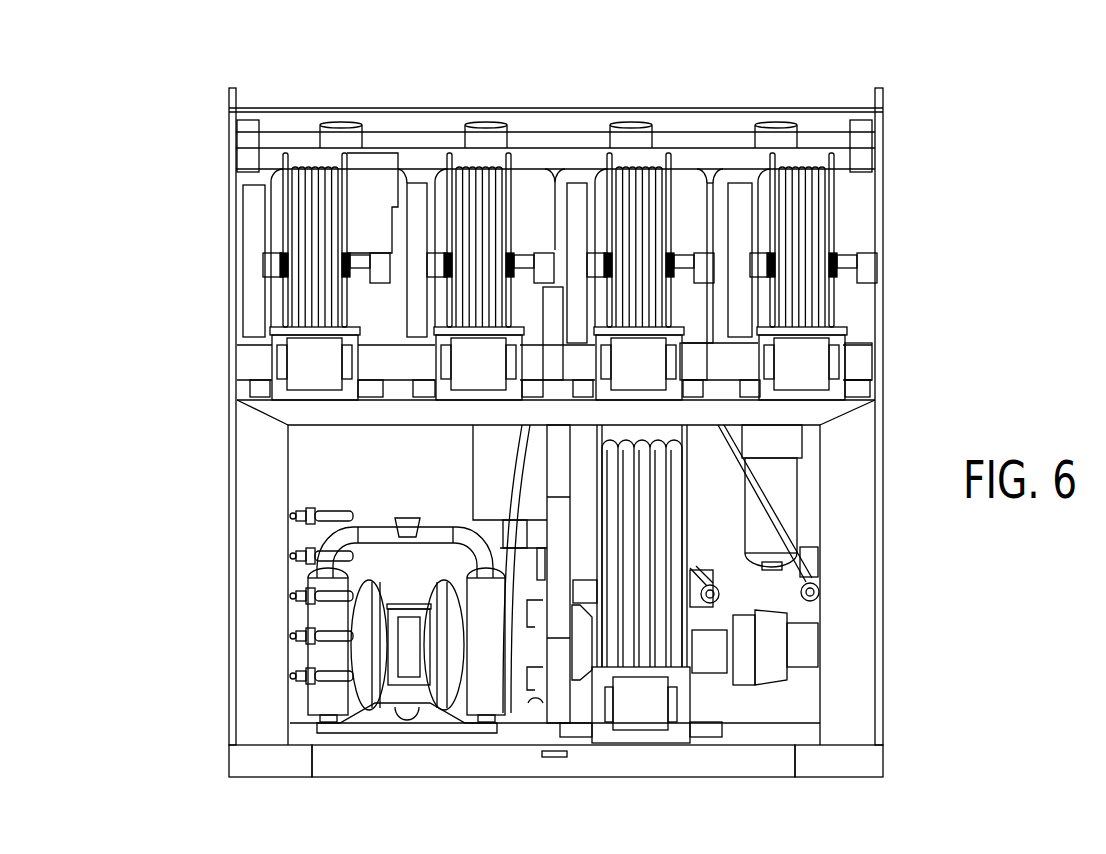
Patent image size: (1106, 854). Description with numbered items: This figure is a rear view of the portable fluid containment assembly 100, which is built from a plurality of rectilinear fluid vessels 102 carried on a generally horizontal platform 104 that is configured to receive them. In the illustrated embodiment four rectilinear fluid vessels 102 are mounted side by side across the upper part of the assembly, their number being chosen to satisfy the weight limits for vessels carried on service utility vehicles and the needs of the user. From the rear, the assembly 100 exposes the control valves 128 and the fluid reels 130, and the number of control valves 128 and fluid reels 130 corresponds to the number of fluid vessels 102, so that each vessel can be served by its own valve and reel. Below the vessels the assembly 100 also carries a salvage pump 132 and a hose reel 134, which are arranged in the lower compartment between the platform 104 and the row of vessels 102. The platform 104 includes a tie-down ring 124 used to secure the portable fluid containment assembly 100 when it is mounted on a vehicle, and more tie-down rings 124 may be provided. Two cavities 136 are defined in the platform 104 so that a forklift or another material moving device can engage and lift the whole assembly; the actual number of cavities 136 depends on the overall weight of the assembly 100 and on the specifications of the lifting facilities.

The portable fluid containment assembly 100 is at (790, 48).
The rectilinear fluid vessels 102 is at (527, 177).
The horizontal platform 104 is at (672, 770).
The tie-down ring 124 is at (554, 758).
The control valves 128 is at (280, 516).
The fluid reels 130 is at (464, 172).
The salvage pump 132 is at (399, 654).
The hose reel 134 is at (620, 514).
The cavities 136 is at (273, 770).